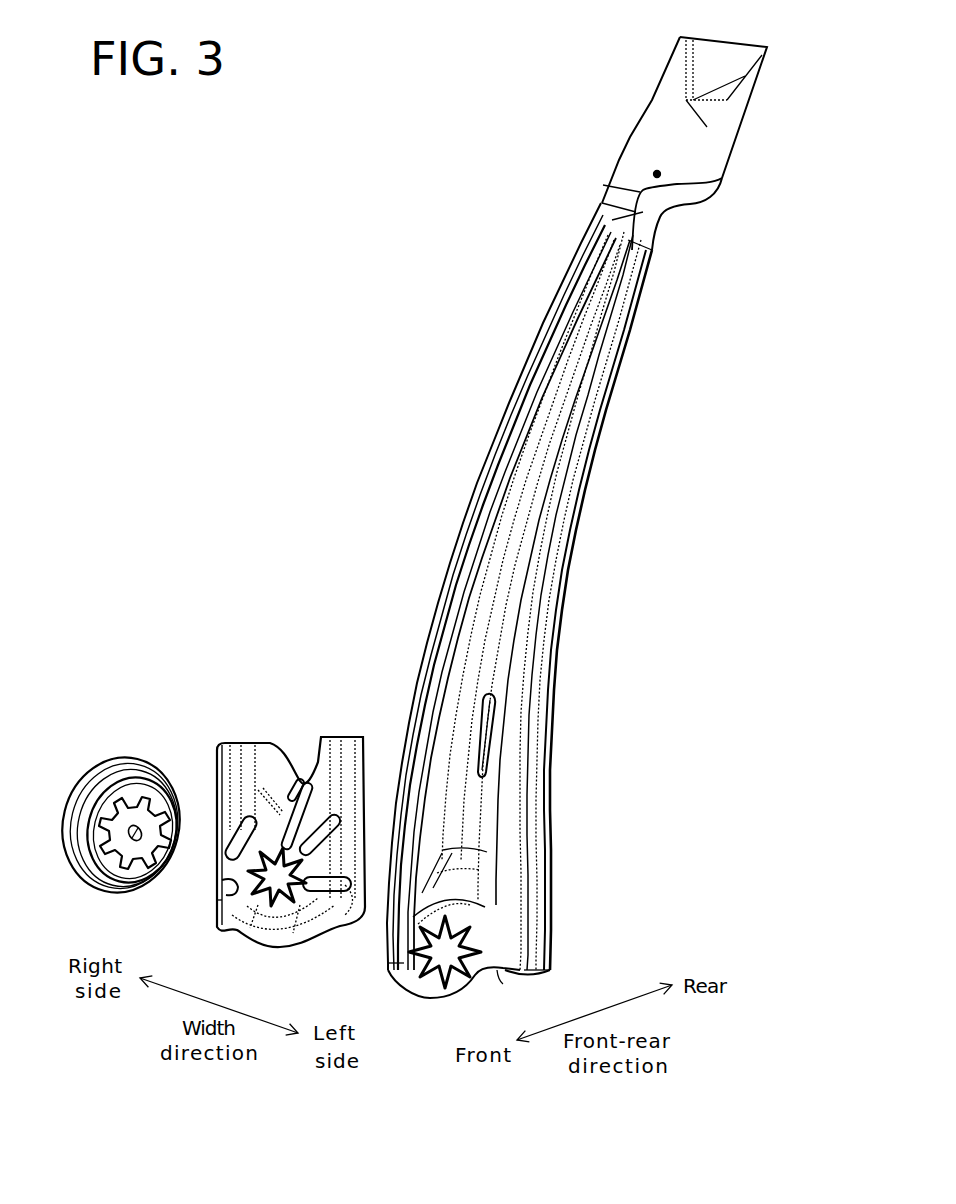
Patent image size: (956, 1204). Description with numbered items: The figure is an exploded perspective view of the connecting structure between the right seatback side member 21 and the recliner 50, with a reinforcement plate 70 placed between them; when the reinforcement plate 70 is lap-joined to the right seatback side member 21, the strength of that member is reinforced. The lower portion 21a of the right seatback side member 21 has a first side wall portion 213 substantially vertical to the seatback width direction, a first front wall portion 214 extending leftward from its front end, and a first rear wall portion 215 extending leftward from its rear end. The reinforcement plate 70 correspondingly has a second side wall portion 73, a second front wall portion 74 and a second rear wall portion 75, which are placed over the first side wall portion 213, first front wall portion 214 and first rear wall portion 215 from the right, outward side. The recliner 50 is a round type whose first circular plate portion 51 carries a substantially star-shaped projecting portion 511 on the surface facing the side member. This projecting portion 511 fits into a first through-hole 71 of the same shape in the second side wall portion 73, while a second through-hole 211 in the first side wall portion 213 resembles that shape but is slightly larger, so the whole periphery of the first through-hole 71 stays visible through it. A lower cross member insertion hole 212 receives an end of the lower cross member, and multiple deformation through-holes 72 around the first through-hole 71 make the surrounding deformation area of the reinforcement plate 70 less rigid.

The right seatback side member 21 is at (512, 213).
The lower portion 21a is at (470, 887).
The second through-hole 211 is at (435, 972).
The lower cross member insertion hole 212 is at (500, 712).
The first side wall portion 213 is at (503, 970).
The first front wall portion 214 is at (392, 946).
The first rear wall portion 215 is at (543, 930).
The recliner 50 is at (87, 740).
The first circular plate portion 51 is at (130, 890).
The projecting portion 511 is at (172, 845).
The reinforcement plate 70 is at (258, 694).
The first through-hole 71 is at (263, 937).
The deformation through-holes 72 is at (293, 778).
The second side wall portion 73 is at (293, 933).
The second front wall portion 74 is at (216, 905).
The second rear wall portion 75 is at (360, 890).